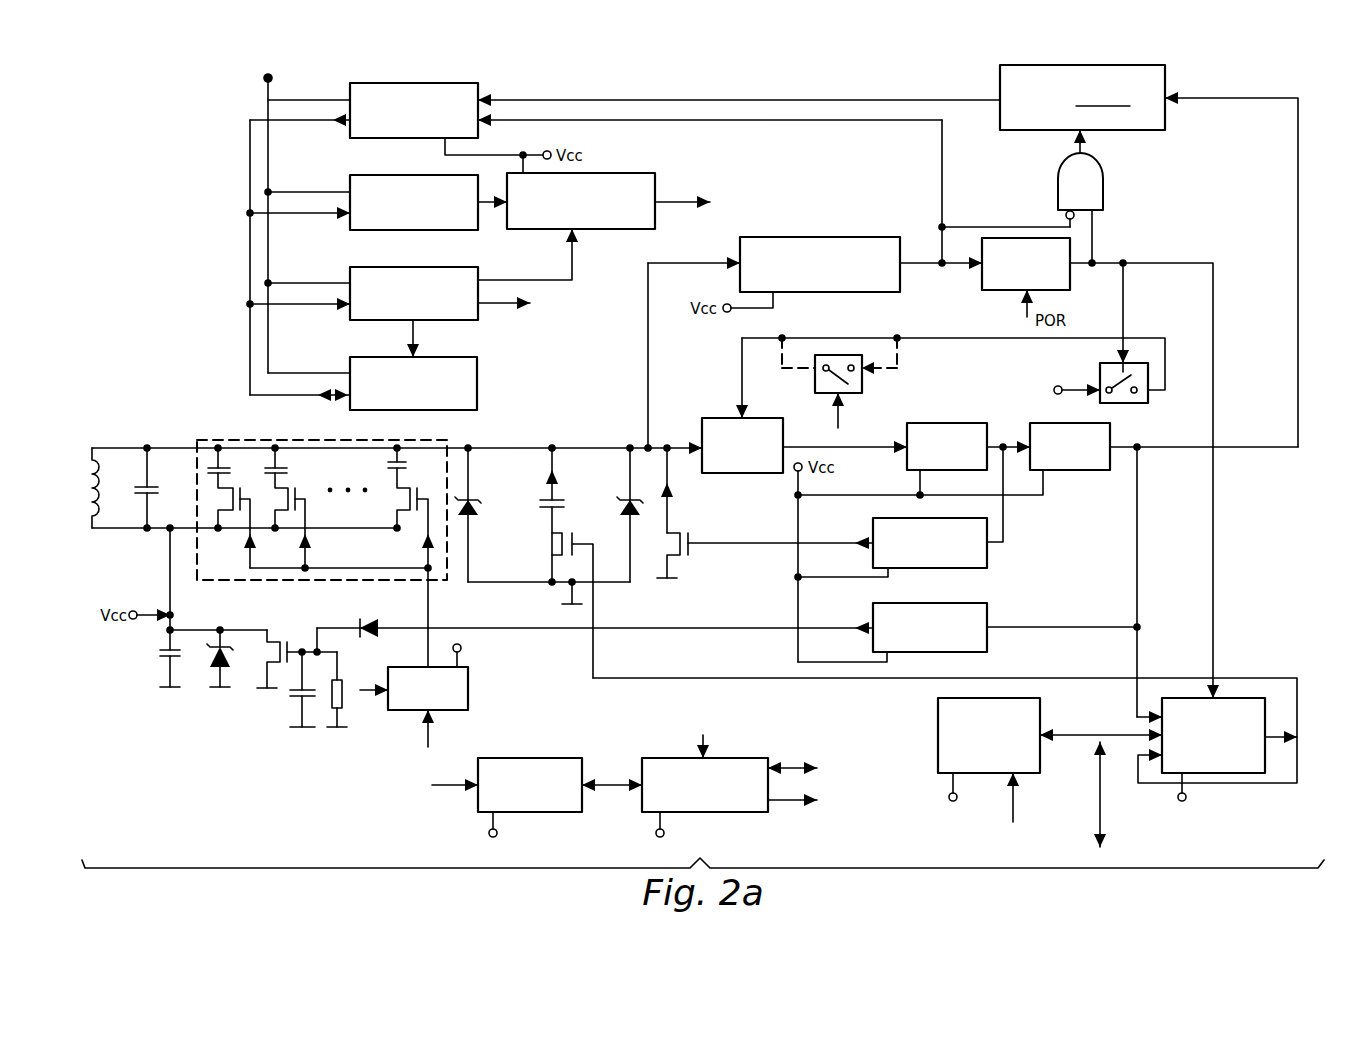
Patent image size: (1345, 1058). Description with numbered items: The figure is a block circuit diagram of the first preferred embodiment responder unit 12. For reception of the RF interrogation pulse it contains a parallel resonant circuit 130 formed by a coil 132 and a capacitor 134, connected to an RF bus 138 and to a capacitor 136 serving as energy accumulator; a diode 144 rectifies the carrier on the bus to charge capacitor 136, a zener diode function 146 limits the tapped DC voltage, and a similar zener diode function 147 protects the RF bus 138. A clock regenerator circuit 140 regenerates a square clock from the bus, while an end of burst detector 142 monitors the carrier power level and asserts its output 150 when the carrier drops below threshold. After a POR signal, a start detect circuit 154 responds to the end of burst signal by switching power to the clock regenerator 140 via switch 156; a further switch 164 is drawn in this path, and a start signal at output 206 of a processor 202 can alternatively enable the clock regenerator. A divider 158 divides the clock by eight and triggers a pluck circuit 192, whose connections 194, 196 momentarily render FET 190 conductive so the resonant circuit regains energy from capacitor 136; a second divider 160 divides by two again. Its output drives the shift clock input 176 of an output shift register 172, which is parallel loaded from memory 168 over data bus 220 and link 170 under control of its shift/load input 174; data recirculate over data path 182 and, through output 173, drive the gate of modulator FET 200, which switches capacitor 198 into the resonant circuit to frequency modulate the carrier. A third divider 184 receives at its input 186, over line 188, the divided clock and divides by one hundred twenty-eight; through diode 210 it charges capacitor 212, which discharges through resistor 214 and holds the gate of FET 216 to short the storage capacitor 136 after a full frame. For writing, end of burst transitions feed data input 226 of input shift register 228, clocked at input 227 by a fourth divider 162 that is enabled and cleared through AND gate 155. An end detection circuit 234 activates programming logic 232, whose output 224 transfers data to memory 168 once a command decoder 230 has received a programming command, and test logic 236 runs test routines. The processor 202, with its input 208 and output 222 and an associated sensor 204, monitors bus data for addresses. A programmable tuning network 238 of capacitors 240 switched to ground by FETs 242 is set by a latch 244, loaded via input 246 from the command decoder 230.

The responder unit 12 is at (205, 181).
The parallel resonant circuit 130 is at (125, 528).
The coil 132 is at (100, 462).
The capacitor 134 is at (162, 480).
The capacitor 136 is at (160, 652).
The RF bus 138 is at (582, 445).
The clock regenerator circuit 140 is at (750, 474).
The end of burst detector 142 is at (807, 237).
The diode 144 is at (642, 512).
The zener diode function 146 is at (205, 670).
The zener diode 147 is at (478, 510).
The output of end of burst detection circuit 150 is at (900, 268).
The start detect circuit 154 is at (1005, 290).
The AND gate 155 is at (1103, 190).
The switch 156 is at (1130, 403).
The divider 158 is at (962, 425).
The second divider 160 is at (1068, 470).
The fourth divider 162 is at (1000, 82).
The switch 164 is at (815, 390).
The memory 168 is at (938, 720).
The memory data bus 170 is at (1044, 731).
The output shift register 172 is at (1262, 762).
The output line 173 is at (1268, 732).
The shift/load input 174 is at (1220, 697).
The shift clock input 176 is at (1165, 716).
The data path 182 is at (1212, 785).
The third divider 184 is at (987, 610).
The input of third divider 186 is at (987, 635).
The counter input line 188 is at (873, 620).
The field-effect transistor 190 is at (688, 556).
The pluck circuit 192 is at (985, 568).
The pluck circuit input line 194 is at (987, 548).
The pluck circuit output line 196 is at (873, 535).
The capacitor 198 is at (541, 500).
The modulator FET 200 is at (572, 533).
The processor 202 is at (693, 812).
The sensor 204 is at (545, 812).
The output of processor 206 is at (845, 428).
The processor input line 208 is at (703, 750).
The diode 210 is at (368, 620).
The capacitor 212 is at (317, 697).
The resistor 214 is at (345, 712).
The field-effect transistor 216 is at (277, 690).
The data bus 220 is at (250, 272).
The processor data line 222 is at (790, 768).
The programming line 224 is at (660, 205).
The data input 226 is at (482, 116).
The clock input 227 is at (492, 99).
The input shift register 228 is at (415, 84).
The command decoder 230 is at (362, 268).
The programming logic 232 is at (620, 173).
The end detection circuit 234 is at (362, 176).
The test logic 236 is at (362, 358).
The programmable tuning network 238 is at (447, 440).
The capacitor 240 is at (288, 470).
The field-effect transistor 242 is at (312, 490).
The latch 244 is at (468, 690).
The latch input line 246 is at (490, 303).